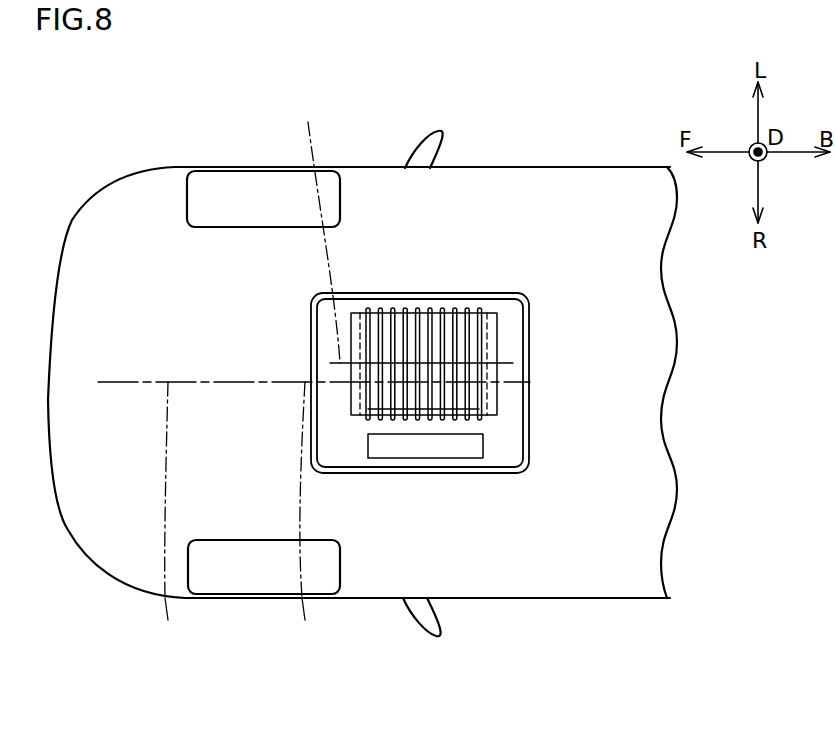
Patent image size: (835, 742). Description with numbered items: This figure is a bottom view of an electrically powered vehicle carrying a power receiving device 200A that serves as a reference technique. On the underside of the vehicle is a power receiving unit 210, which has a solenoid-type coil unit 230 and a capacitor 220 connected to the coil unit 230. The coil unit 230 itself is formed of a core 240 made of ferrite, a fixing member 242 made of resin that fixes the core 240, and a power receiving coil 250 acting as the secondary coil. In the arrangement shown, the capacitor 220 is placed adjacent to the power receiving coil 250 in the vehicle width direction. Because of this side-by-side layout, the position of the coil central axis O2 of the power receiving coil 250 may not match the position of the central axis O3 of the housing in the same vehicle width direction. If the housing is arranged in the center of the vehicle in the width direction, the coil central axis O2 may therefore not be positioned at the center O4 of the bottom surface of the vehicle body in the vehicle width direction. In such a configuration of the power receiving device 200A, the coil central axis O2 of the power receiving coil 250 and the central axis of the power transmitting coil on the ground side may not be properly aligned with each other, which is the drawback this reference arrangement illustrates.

The power receiving device 200A is at (293, 343).
The power receiving unit 210 is at (430, 58).
The capacitor 220 is at (457, 447).
The coil unit 230 is at (365, 88).
The core 240 is at (464, 310).
The fixing member 242 is at (359, 315).
The power receiving coil 250 is at (479, 310).
The coil central axis O2 is at (317, 229).
The central axis of housing O3 is at (308, 513).
The center of bottom surface O4 is at (170, 513).